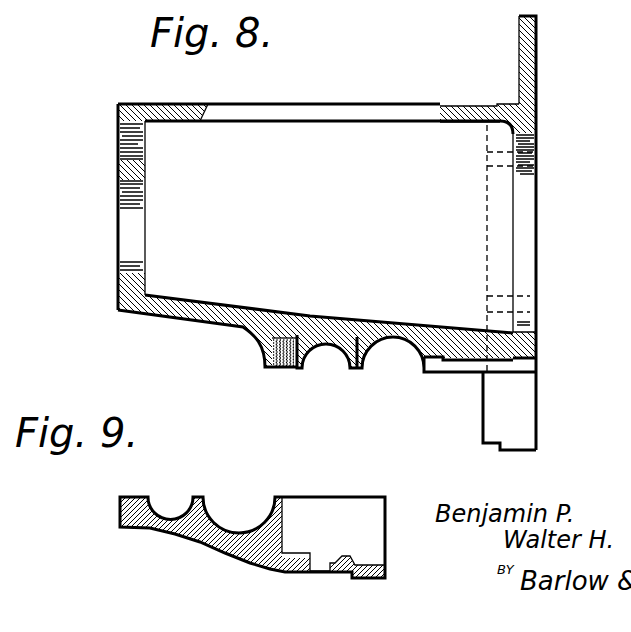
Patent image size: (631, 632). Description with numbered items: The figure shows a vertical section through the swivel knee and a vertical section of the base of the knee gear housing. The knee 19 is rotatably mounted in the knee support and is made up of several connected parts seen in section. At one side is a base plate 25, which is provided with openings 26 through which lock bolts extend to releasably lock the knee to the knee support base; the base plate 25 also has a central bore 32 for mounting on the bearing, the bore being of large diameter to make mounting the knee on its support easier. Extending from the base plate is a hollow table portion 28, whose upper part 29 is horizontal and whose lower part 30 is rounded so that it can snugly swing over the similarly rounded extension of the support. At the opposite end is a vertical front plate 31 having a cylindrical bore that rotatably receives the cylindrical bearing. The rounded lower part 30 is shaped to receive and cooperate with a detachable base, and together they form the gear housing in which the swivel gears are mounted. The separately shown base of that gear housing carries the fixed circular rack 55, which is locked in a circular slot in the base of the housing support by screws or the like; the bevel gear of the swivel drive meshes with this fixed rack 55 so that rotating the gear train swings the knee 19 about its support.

In FIG. 8, the knee 19 is at (537, 78).
In FIG. 8, the base plate 25 is at (537, 118).
In FIG. 8, the openings 26 is at (536, 160).
In FIG. 8, the hollow table portion 28 is at (470, 125).
In FIG. 8, the upper part 29 is at (200, 103).
In FIG. 8, the lower part 30 is at (238, 320).
In FIG. 8, the vertical front plate 31 is at (115, 298).
In FIG. 8, the central bore 32 is at (530, 228).
In FIG. 9, the fixed circular rack 55 is at (280, 573).